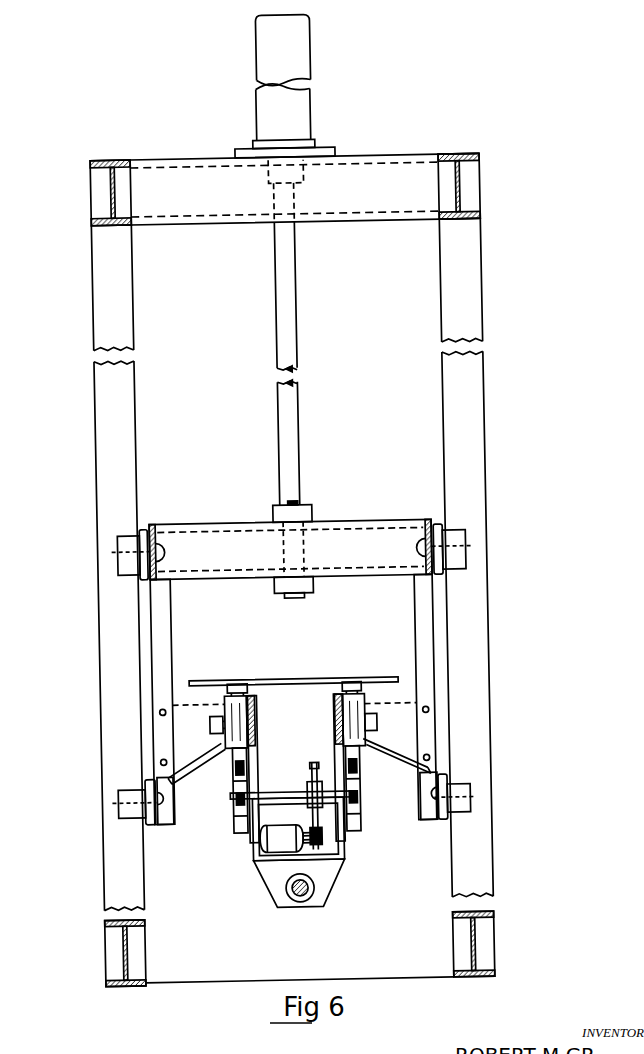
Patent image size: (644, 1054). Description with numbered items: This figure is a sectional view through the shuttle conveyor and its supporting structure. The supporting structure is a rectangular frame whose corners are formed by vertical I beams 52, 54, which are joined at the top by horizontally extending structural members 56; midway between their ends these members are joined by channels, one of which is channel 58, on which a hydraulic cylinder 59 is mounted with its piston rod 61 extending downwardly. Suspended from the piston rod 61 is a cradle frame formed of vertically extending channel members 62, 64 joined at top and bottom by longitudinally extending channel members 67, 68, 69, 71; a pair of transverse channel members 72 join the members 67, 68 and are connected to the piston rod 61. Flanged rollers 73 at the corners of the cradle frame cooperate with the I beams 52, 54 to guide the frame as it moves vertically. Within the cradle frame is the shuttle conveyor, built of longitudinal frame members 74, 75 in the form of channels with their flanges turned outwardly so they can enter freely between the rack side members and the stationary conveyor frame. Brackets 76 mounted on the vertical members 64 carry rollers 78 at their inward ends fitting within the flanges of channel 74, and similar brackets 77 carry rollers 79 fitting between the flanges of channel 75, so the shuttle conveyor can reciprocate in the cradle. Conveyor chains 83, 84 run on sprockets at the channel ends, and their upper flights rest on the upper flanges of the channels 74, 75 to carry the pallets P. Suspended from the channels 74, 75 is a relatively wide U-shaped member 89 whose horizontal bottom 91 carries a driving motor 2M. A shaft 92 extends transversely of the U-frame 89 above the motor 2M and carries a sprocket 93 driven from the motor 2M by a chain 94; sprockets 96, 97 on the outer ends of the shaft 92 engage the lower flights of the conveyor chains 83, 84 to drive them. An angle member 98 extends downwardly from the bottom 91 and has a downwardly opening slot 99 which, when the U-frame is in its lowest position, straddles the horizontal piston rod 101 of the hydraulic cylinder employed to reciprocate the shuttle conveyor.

The I beam 52 is at (100, 450).
The I beam 54 is at (482, 457).
The horizontally extending structural members 56 is at (117, 190).
The channel 58 is at (232, 216).
The hydraulic cylinder 59 is at (321, 111).
The piston rod 61 is at (305, 381).
The channel member 62 is at (416, 634).
The channel member 64 is at (171, 647).
The channel member 67 is at (157, 520).
The channel member 68 is at (424, 523).
The channel member 69 is at (163, 830).
The channel member 71 is at (425, 818).
The transverse channel members 72 is at (227, 525).
The flanged rollers 73 is at (128, 572).
The longitudinal frame member 74 is at (247, 691).
The longitudinal frame member 75 is at (337, 691).
The brackets 76 is at (183, 760).
The brackets 77 is at (398, 750).
The rollers 78 is at (209, 716).
The rollers 79 is at (374, 716).
The conveyor chain 83 is at (246, 689).
The conveyor chain 84 is at (339, 689).
The U-shaped member 89 is at (254, 776).
The bottom 91 is at (249, 864).
The shaft 92 is at (266, 797).
The sprocket 93 is at (311, 770).
The chain 94 is at (313, 834).
The sprocket 96 is at (230, 826).
The sprocket 97 is at (356, 823).
The angle member 98 is at (324, 880).
The slot 99 is at (289, 903).
The piston rod 101 is at (294, 897).
The pallets P is at (286, 679).
The driving motor 2M is at (278, 832).